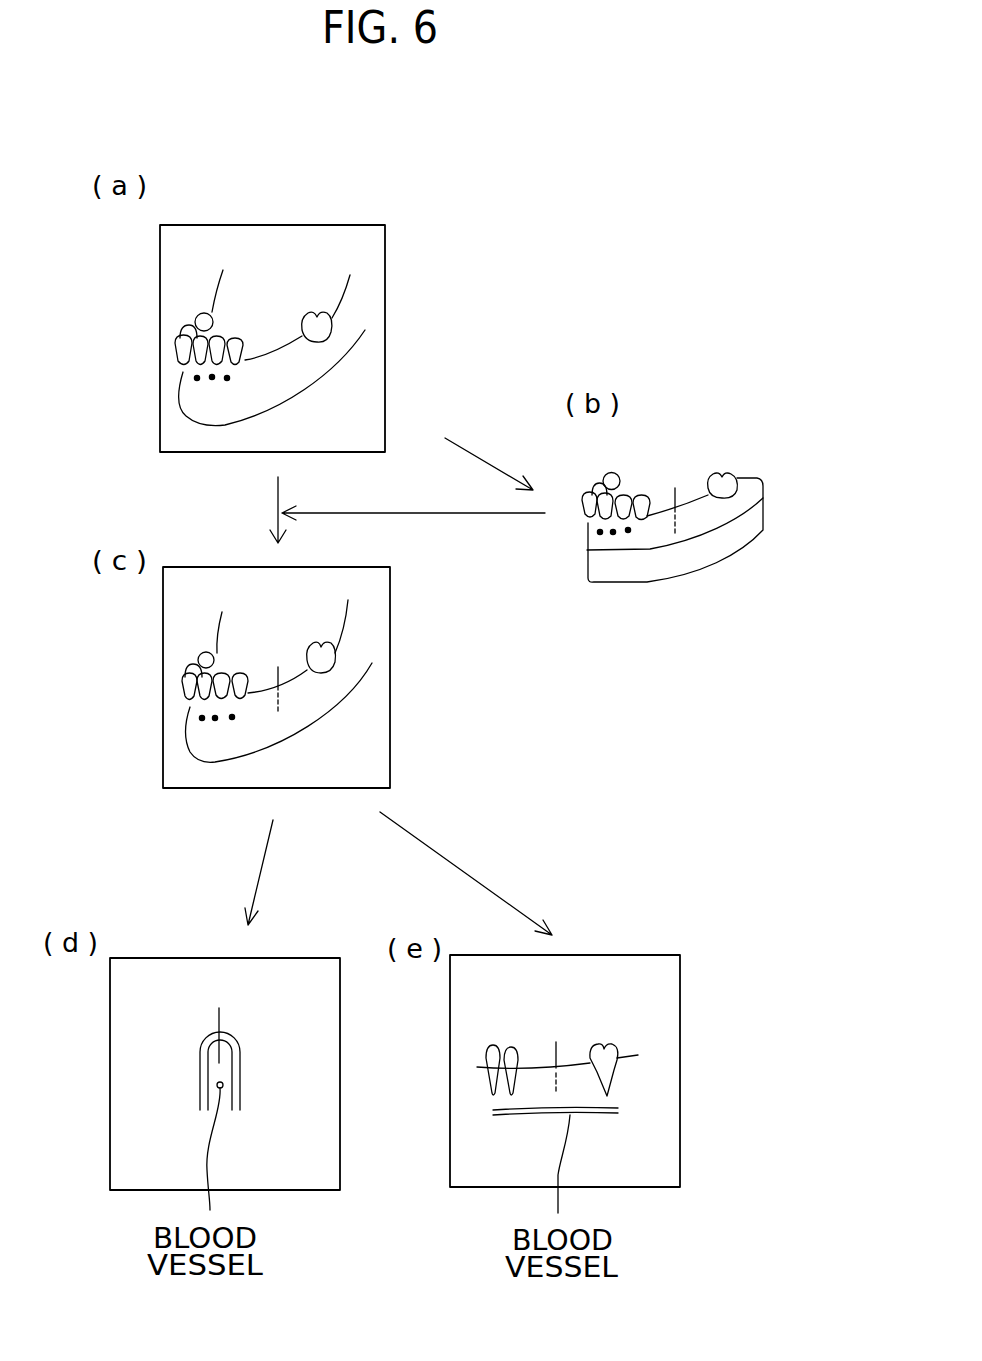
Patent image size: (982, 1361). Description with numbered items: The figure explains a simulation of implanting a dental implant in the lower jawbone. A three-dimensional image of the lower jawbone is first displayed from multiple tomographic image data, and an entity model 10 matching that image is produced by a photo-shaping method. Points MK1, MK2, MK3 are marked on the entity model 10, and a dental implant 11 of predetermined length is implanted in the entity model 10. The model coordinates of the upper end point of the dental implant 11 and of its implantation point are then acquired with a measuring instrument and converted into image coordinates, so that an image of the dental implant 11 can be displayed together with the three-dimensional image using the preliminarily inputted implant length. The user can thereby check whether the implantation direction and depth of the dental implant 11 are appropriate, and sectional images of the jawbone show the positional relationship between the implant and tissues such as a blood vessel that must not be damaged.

The entity model 10 is at (741, 552).
The dental implant 11 is at (678, 499).
The first model marker point MK1 is at (600, 532).
The second model marker point MK2 is at (613, 532).
The third model marker point MK3 is at (628, 530).